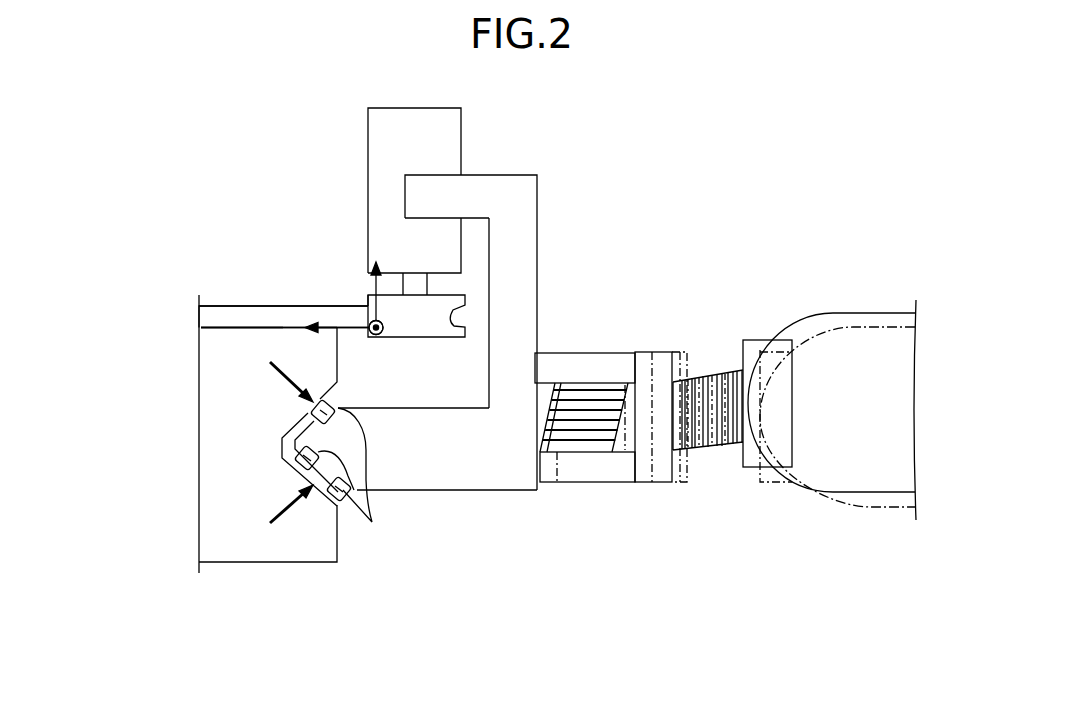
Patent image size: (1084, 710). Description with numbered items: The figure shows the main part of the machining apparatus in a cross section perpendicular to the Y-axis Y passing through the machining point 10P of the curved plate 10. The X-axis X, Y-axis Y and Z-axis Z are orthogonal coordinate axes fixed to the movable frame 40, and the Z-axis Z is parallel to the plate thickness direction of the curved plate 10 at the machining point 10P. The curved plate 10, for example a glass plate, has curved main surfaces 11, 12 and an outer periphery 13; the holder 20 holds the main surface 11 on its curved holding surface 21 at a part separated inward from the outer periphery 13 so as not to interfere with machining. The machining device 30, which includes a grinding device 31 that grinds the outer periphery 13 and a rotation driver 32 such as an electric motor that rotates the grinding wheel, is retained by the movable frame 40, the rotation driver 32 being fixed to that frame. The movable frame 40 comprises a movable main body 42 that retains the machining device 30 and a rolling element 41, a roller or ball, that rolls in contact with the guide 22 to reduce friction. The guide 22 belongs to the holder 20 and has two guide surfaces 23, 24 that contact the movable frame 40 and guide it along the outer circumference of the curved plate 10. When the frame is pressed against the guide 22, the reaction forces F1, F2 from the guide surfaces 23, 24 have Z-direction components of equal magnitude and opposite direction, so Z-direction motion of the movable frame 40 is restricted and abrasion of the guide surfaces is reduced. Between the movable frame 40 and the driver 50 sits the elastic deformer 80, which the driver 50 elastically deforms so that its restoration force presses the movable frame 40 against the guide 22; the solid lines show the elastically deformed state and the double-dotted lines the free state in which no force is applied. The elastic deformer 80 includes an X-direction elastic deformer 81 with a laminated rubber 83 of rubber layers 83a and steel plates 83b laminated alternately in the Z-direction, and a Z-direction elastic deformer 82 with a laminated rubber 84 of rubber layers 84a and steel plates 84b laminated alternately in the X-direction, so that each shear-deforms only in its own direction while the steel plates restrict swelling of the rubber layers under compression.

The curved plate 10 is at (276, 296).
The machining point 10P is at (390, 311).
The main surface 11 is at (211, 326).
The main surface 12 is at (227, 304).
The outer periphery 13 is at (366, 306).
The holder 20 is at (266, 574).
The holding surface 21 is at (223, 330).
The guide 22 is at (132, 413).
The guide surface 23 is at (293, 428).
The guide surface 24 is at (286, 458).
The reaction force F1 is at (300, 390).
The reaction force F2 is at (298, 493).
The machining device 30 is at (603, 167).
The grinding device 31 is at (449, 304).
The rotation driver 32 is at (448, 235).
The movable frame 40 is at (453, 548).
The rolling element 41 is at (350, 481).
The movable main body 42 is at (433, 490).
The driver 50 is at (857, 300).
The elastic deformer 80 is at (647, 280).
The X-direction elastic deformer 81 is at (581, 342).
The Z-direction elastic deformer 82 is at (698, 360).
The laminated rubber 83 is at (632, 550).
The rubber layers 83a is at (547, 447).
The steel plates 83b is at (601, 447).
The laminated rubber 84 is at (772, 280).
The rubber layers 84a is at (740, 370).
The steel plates 84b is at (734, 373).
The X-axis X is at (326, 329).
The Y-axis Y is at (376, 345).
The Z-axis Z is at (375, 278).